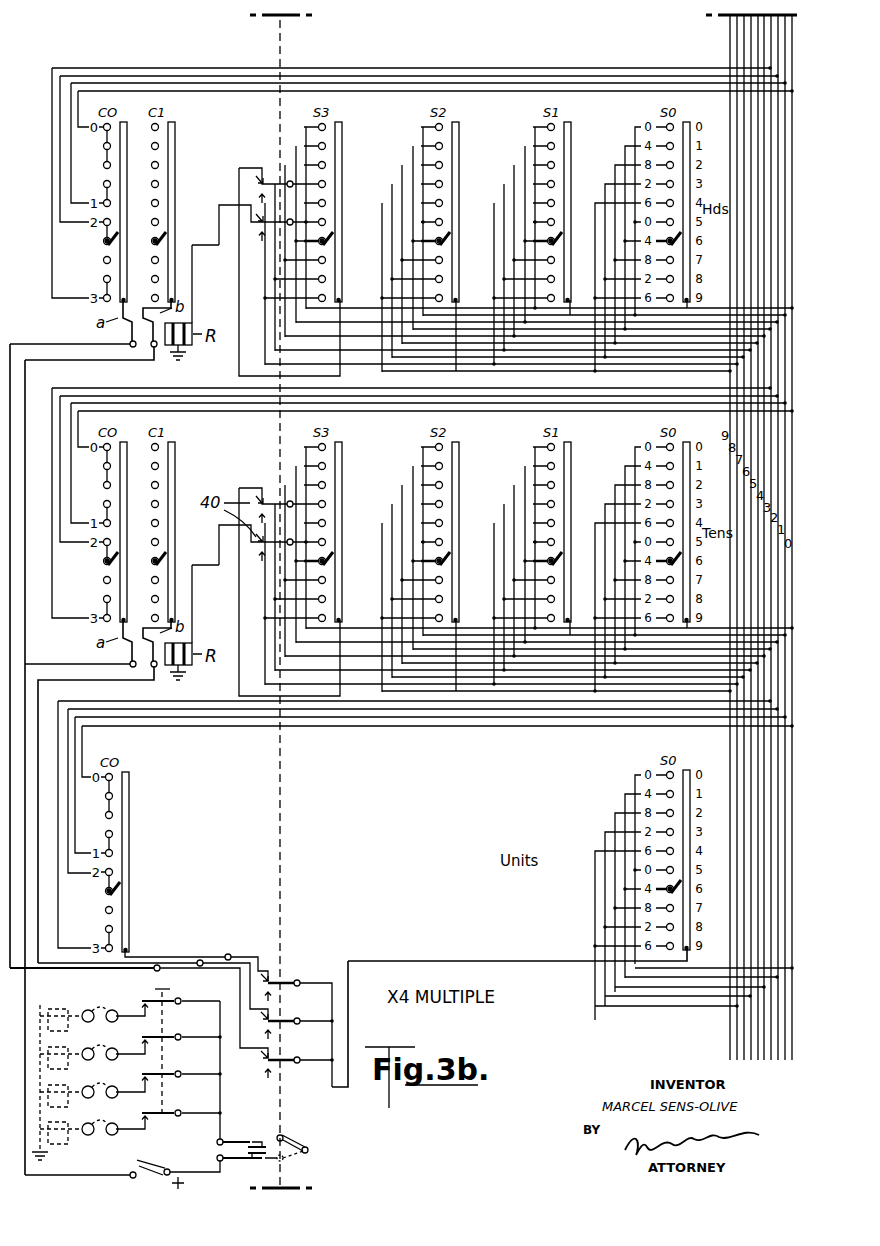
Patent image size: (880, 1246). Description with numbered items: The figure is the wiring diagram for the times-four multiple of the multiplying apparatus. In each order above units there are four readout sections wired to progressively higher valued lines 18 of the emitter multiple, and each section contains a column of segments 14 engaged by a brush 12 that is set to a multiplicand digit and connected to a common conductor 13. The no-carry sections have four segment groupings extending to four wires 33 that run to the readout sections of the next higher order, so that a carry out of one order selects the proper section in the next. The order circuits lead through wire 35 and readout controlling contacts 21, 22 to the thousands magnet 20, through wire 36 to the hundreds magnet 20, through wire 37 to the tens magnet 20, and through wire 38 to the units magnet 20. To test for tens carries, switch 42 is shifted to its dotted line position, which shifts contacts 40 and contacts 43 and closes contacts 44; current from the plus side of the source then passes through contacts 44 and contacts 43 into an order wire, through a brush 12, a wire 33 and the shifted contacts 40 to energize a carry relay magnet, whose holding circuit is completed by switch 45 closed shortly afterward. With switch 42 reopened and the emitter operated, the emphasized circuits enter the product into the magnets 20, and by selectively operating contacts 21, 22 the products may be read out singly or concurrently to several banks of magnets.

The brush 12 is at (160, 234).
The conductor 13 is at (173, 152).
The segment 14 is at (104, 165).
The line 18 is at (795, 42).
The magnet 20 is at (52, 1028).
The contacts 21 is at (168, 1022).
The contacts 22 is at (148, 1030).
The wire 33 is at (232, 66).
The wire 35 is at (158, 964).
The wire 36 is at (201, 960).
The wire 37 is at (231, 955).
The wire 38 is at (375, 961).
The contacts 40 is at (256, 217).
The switch 42 is at (298, 1142).
The contacts 43 is at (262, 1003).
The contacts 44 is at (262, 1150).
The switch 45 is at (152, 1166).